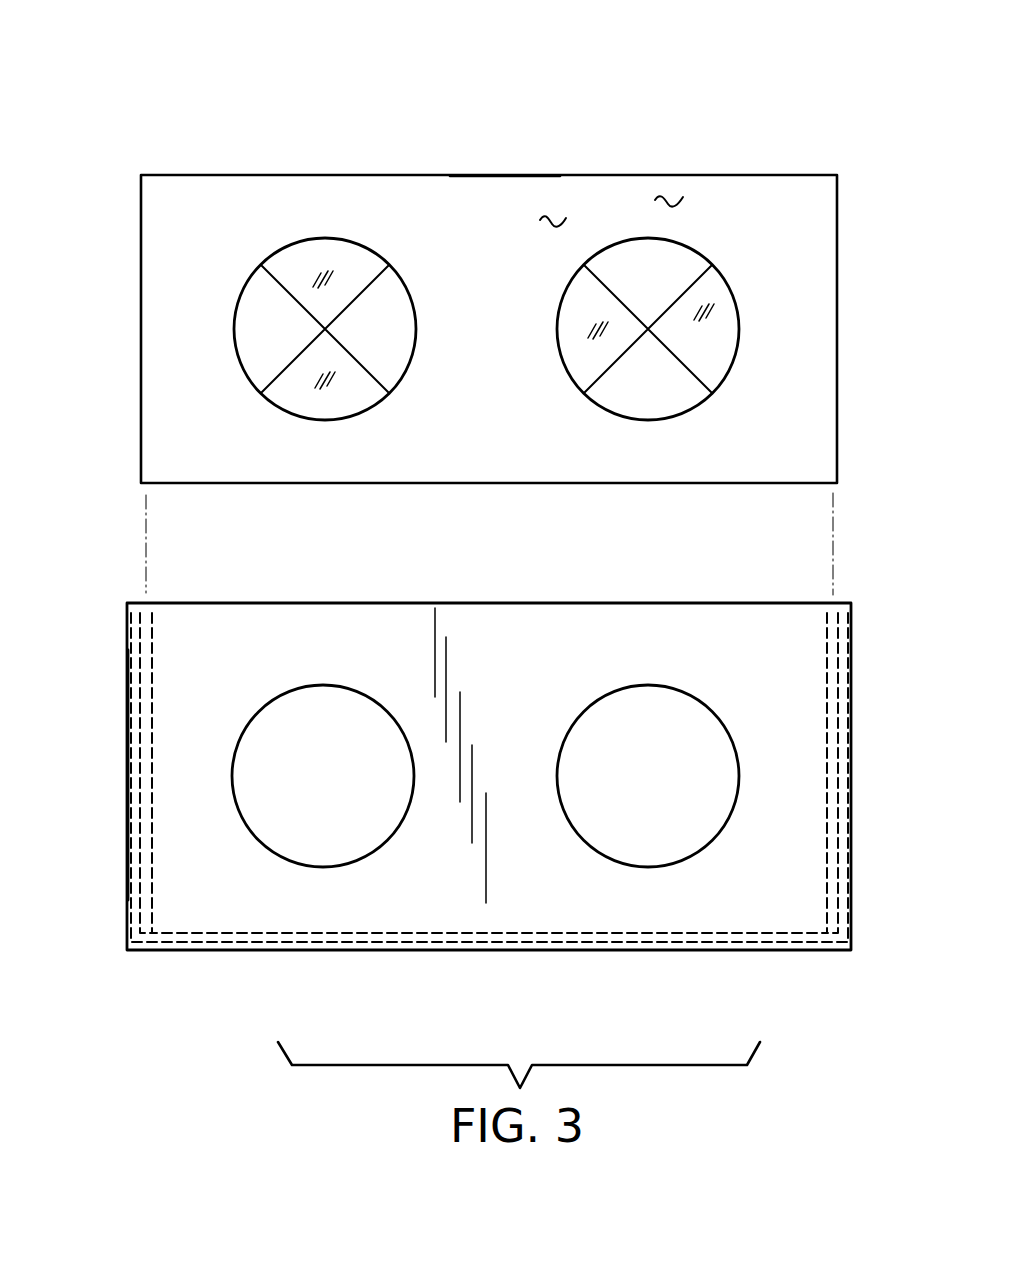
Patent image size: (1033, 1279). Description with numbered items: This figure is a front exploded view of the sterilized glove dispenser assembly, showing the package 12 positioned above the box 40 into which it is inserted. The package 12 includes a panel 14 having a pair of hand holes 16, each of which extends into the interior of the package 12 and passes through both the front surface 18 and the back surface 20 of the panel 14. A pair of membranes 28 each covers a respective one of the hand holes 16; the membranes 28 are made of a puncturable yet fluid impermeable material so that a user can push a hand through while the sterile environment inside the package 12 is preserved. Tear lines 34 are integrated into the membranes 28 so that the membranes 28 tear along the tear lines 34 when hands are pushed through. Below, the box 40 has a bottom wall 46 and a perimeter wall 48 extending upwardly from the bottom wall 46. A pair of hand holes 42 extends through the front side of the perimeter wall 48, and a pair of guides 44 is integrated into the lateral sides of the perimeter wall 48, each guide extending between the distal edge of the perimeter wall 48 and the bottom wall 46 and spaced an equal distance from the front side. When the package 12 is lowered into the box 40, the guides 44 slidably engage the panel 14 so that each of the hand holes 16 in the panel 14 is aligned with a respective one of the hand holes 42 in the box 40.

The package 12 is at (398, 124).
The panel 14 is at (490, 215).
The hand holes 16 is at (318, 238).
The front surface 18 is at (670, 200).
The back surface 20 is at (553, 222).
The membranes 28 is at (267, 327).
The tear lines 34 is at (290, 386).
The box 40 is at (851, 605).
The hand holes 42 is at (338, 838).
The guides 44 is at (152, 628).
The bottom wall 46 is at (808, 930).
The perimeter wall 48 is at (127, 727).